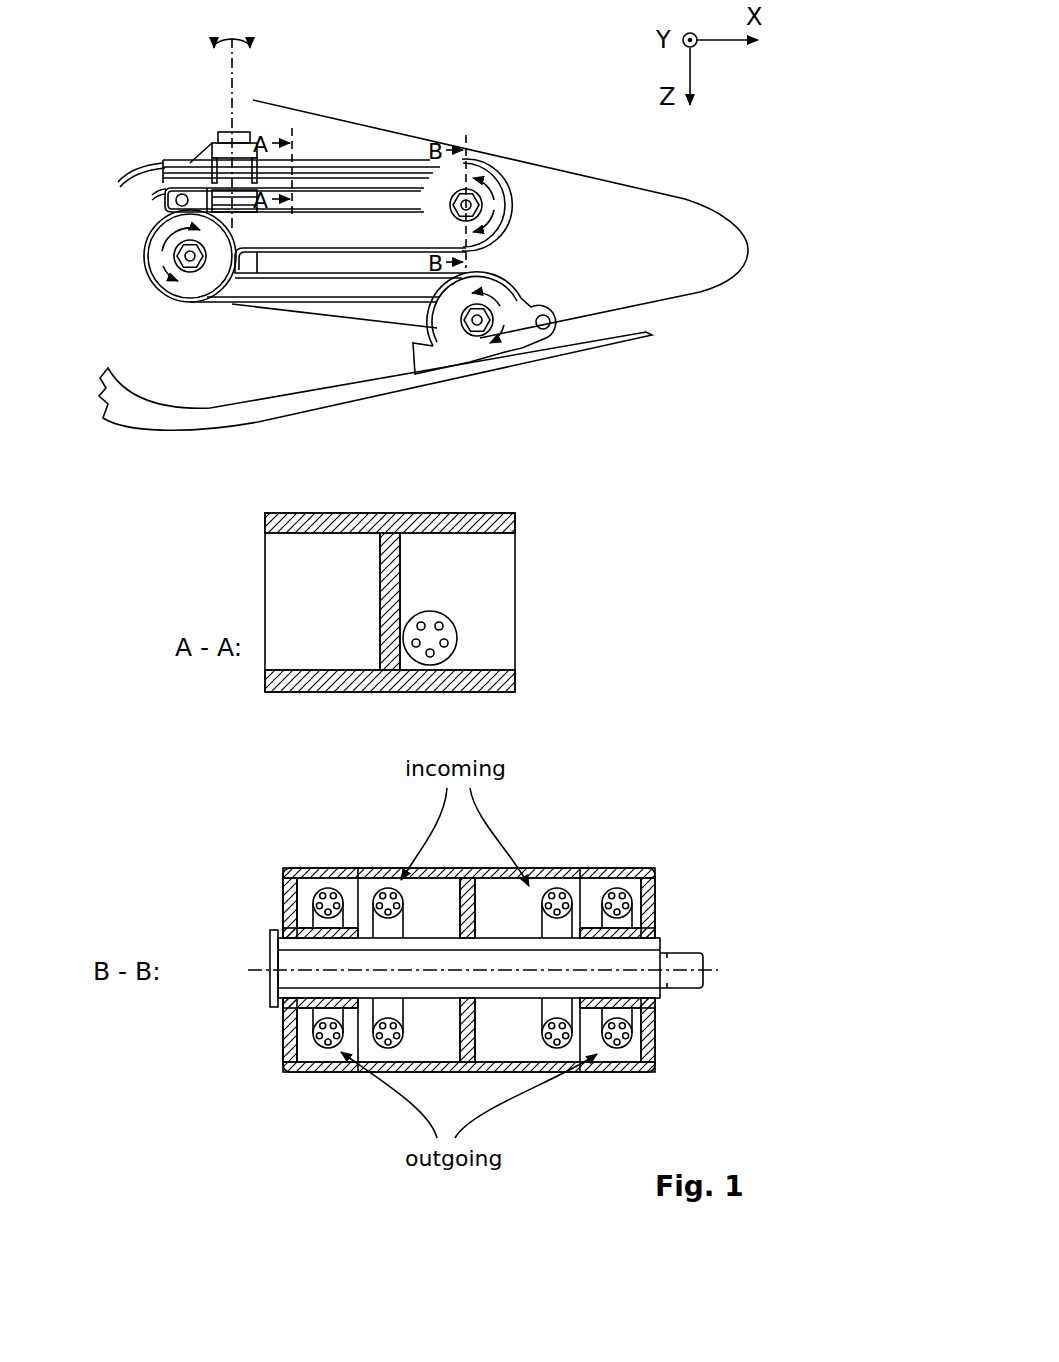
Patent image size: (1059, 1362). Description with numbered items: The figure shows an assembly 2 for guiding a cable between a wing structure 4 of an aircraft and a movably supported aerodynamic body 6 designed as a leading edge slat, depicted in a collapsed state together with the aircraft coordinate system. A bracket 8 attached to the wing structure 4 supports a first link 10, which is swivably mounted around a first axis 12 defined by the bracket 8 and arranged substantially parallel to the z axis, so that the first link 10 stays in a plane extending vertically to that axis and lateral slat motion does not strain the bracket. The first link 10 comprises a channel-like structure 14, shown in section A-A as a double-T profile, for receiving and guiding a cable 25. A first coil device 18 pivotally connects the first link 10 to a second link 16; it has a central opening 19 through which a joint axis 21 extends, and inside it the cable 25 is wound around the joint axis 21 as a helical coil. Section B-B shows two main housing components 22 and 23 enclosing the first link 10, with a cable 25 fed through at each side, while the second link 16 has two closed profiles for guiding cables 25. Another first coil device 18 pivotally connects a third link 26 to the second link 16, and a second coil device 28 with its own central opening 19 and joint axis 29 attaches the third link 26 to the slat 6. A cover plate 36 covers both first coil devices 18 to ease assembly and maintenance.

The assembly 2 is at (348, 138).
The wing structure 4 is at (542, 178).
The aerodynamic body 6 is at (253, 415).
The bracket 8 is at (165, 212).
The first link 10 is at (380, 172).
The first axis 12 is at (228, 72).
The channel-like structure 14 is at (297, 170).
The second link 16 is at (293, 240).
The first coil device 18 is at (522, 210).
The central opening 19 is at (468, 188).
The joint axis 21 is at (193, 240).
The main housing component 22 is at (650, 883).
The main housing component 23 is at (310, 873).
The cable 25 is at (447, 632).
The third link 26 is at (352, 282).
The second coil device 28 is at (477, 352).
The joint axis 29 is at (470, 338).
The cover plate 36 is at (358, 244).